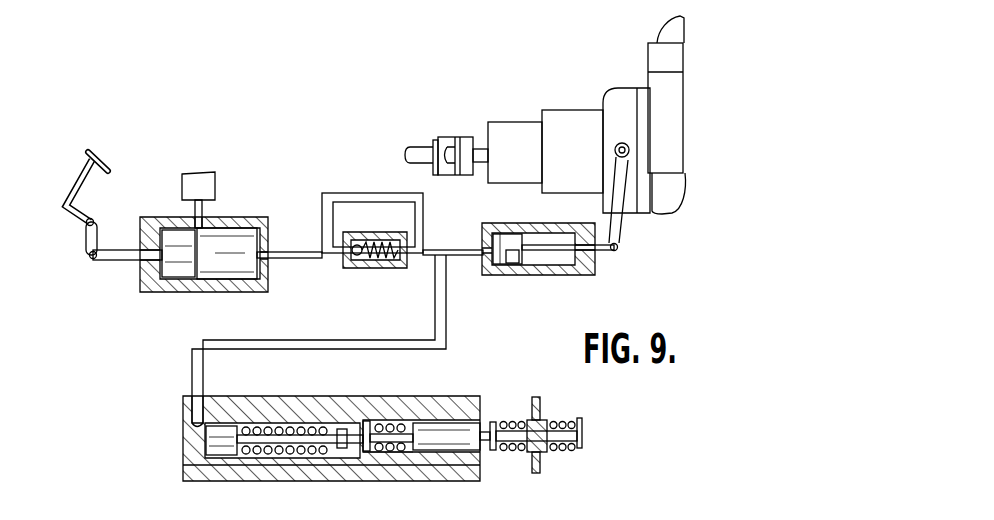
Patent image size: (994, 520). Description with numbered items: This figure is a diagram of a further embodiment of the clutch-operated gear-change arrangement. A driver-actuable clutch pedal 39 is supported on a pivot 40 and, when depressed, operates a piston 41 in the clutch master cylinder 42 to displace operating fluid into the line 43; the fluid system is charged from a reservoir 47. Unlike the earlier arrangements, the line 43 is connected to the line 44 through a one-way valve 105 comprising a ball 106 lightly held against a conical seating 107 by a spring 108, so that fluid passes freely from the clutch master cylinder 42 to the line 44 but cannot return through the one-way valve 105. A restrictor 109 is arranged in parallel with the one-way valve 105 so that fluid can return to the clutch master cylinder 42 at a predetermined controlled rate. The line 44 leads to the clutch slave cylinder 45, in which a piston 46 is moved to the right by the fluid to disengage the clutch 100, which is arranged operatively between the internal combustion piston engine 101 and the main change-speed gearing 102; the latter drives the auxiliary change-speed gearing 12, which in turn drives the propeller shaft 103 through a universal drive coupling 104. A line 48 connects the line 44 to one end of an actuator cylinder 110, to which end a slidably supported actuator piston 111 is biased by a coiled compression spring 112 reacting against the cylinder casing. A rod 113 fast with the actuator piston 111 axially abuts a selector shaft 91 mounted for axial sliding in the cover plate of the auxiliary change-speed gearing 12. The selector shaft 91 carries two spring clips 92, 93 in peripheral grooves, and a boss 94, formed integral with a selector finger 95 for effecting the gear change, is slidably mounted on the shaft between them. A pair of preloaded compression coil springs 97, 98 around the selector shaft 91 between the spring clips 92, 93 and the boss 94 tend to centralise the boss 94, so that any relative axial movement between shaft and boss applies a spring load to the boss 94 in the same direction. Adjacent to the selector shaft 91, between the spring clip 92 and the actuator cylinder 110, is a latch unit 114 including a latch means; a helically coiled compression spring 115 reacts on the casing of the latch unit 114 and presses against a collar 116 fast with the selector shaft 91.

The auxiliary change-speed gearing 12 is at (513, 130).
The clutch pedal 39 is at (109, 160).
The pivot 40 is at (95, 220).
The piston 41 is at (185, 237).
The clutch master cylinder 42 is at (225, 238).
The line 43 is at (287, 250).
The line 44 is at (465, 249).
The clutch slave cylinder 45 is at (495, 240).
The piston 46 is at (510, 263).
The reservoir 47 is at (188, 182).
The line 48 is at (442, 316).
The selector shaft 91 is at (400, 430).
The spring clip 92 is at (494, 424).
The spring clip 93 is at (583, 432).
The boss 94 is at (545, 446).
The selector finger 95 is at (535, 474).
The compression coil spring 97 is at (512, 446).
The compression coil spring 98 is at (558, 424).
The clutch 100 is at (623, 97).
The internal combustion piston engine 101 is at (660, 162).
The main change-speed gearing 102 is at (563, 120).
The propeller shaft 103 is at (418, 150).
The universal drive coupling 104 is at (462, 143).
The one-way valve 105 is at (370, 278).
The ball 106 is at (352, 262).
The conical seating 107 is at (350, 270).
The spring 108 is at (392, 269).
The restrictor 109 is at (372, 193).
The actuator cylinder 110 is at (192, 427).
The actuator piston 111 is at (214, 432).
The coiled compression spring 112 is at (265, 428).
The rod 113 is at (303, 436).
The latch unit 114 is at (447, 428).
The helically coiled compression spring 115 is at (390, 452).
The collar 116 is at (365, 420).